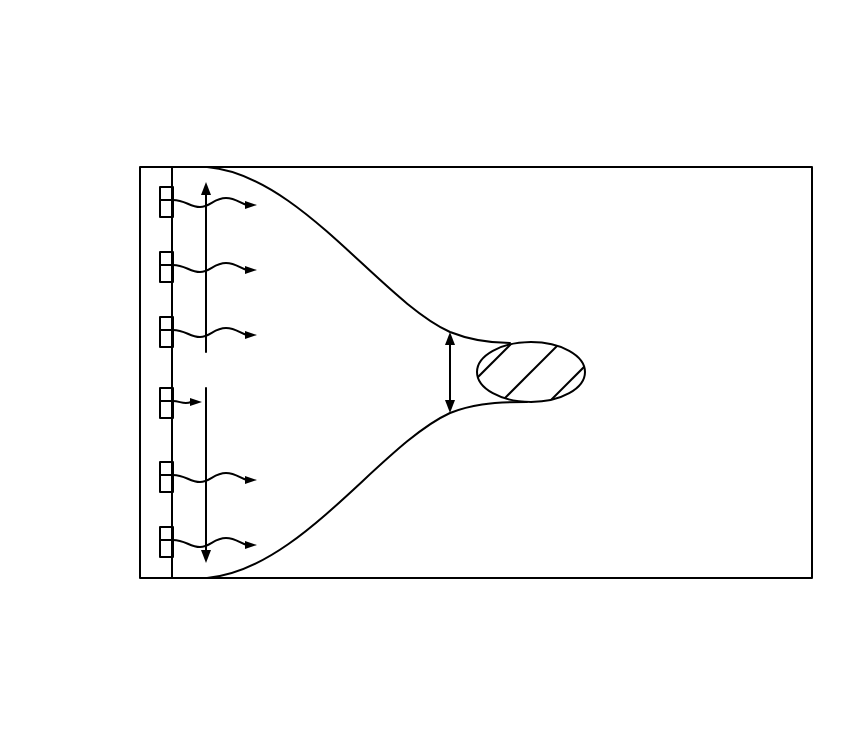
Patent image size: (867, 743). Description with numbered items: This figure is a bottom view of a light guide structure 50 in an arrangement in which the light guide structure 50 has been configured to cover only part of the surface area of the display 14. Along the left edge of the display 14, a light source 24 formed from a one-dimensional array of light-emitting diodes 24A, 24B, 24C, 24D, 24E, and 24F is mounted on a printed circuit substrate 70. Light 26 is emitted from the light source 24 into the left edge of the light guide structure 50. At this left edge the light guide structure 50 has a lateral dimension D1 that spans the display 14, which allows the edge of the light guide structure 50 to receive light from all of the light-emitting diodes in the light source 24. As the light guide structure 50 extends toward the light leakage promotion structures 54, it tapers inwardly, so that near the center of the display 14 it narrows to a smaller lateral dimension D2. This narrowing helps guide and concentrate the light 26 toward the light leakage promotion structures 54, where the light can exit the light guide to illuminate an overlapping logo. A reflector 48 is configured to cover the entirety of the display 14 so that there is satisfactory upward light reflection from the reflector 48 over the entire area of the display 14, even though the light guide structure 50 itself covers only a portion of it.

The display 14 is at (781, 103).
The light source 24 is at (160, 146).
The light-emitting diode 24A is at (160, 200).
The light-emitting diode 24B is at (160, 265).
The light-emitting diode 24C is at (160, 330).
The light-emitting diode 24D is at (160, 401).
The light-emitting diode 24E is at (160, 475).
The light-emitting diode 24F is at (160, 540).
The light 26 is at (226, 200).
The reflector 48 is at (556, 568).
The light guide structure 50 is at (345, 471).
The light leakage promotion structures 54 is at (531, 388).
The printed circuit substrate 70 is at (152, 570).
The lateral dimension D1 is at (205, 372).
The lateral dimension D2 is at (434, 372).